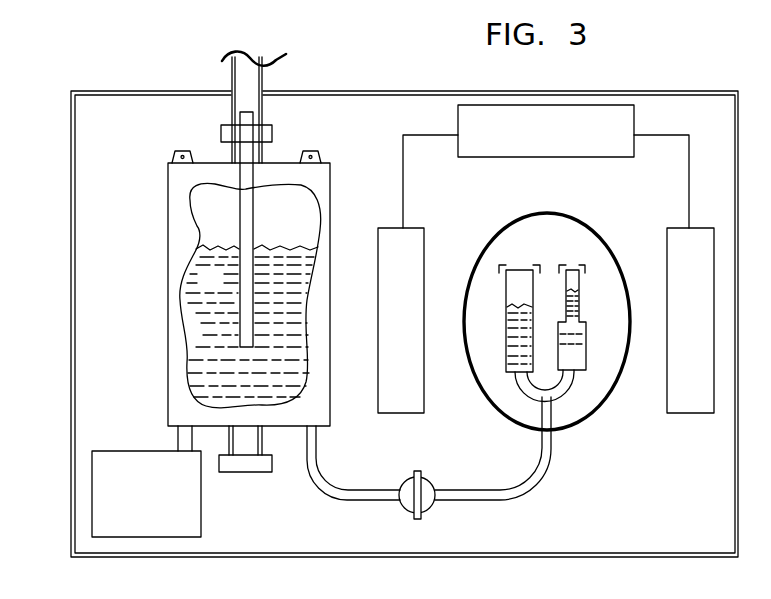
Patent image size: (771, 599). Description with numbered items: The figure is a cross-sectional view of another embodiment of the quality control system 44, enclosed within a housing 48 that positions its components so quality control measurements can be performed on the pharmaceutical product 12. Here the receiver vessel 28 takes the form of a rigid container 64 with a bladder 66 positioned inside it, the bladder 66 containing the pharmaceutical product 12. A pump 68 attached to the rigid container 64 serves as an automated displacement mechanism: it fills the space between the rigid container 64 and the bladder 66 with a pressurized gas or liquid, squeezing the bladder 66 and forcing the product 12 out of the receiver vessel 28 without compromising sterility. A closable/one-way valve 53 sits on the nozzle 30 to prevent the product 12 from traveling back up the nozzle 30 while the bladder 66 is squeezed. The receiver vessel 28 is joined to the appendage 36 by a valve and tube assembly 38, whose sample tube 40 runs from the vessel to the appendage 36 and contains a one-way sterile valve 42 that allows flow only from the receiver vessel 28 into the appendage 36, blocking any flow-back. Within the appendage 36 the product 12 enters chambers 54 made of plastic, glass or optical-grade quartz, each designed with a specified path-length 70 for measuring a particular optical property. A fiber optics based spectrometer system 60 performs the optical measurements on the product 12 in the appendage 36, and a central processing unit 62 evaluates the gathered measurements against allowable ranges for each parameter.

The pharmaceutical product 12 is at (222, 291).
The receiver vessel 28 is at (280, 161).
The nozzle 30 is at (253, 220).
The appendage 36 is at (563, 213).
The valve and tube assembly 38 is at (370, 480).
The sample tube 40 is at (318, 460).
The one-way sterile valve 42 is at (433, 481).
The quality control system 44 is at (702, 84).
The housing 48 is at (70, 384).
The closable/one-way valve 53 is at (221, 134).
The chambers 54 is at (586, 331).
The fiber optics based spectrometer system 60 is at (412, 228).
The central processing unit 62 is at (635, 115).
The rigid container 64 is at (167, 195).
The bladder 66 is at (195, 318).
The pump 68 is at (123, 451).
The path-length 70 is at (581, 311).